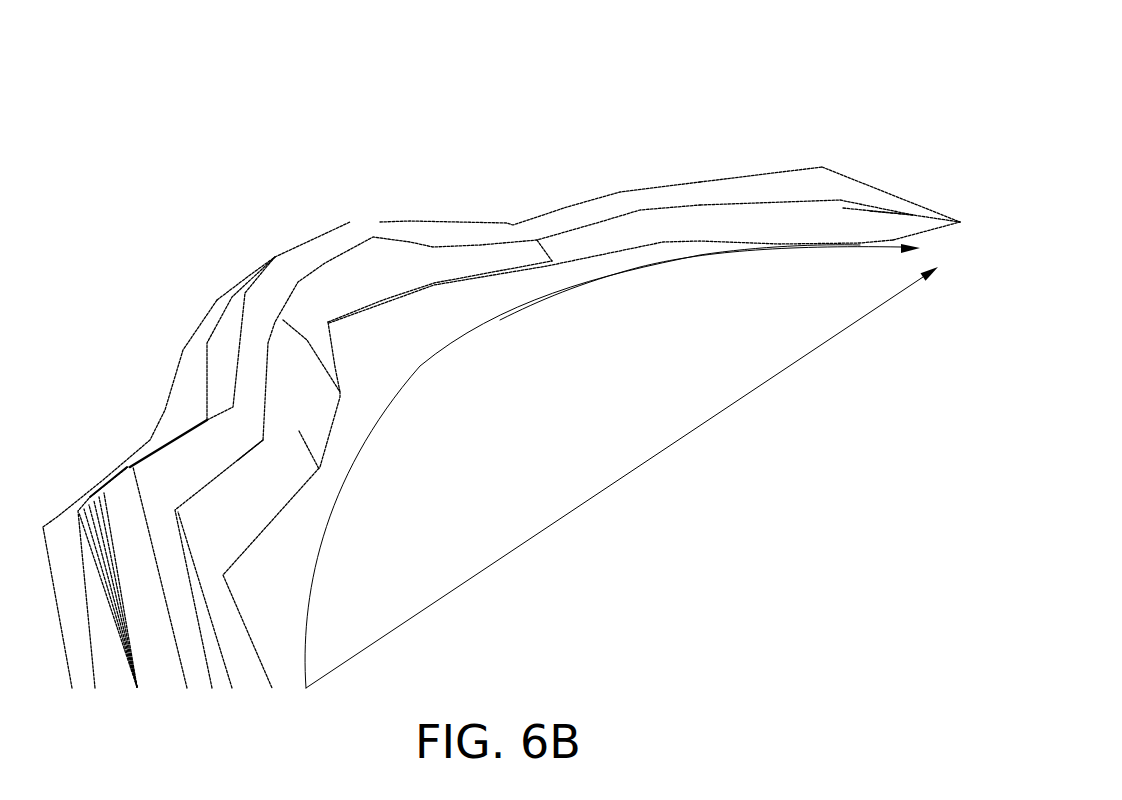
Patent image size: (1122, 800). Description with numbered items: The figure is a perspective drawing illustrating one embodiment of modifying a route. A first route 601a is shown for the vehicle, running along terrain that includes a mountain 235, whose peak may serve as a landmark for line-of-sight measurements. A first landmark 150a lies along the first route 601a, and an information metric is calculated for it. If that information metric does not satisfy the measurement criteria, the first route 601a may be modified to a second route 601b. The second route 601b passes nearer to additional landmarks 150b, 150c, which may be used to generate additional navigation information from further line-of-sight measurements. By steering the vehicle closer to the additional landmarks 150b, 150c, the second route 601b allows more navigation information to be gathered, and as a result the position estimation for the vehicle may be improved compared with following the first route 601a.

The first landmark 150a is at (133, 467).
The additional landmark 150b is at (350, 222).
The additional landmark 150c is at (822, 167).
The mountain 235 is at (512, 223).
The first route 601a is at (533, 538).
The second route 601b is at (583, 285).